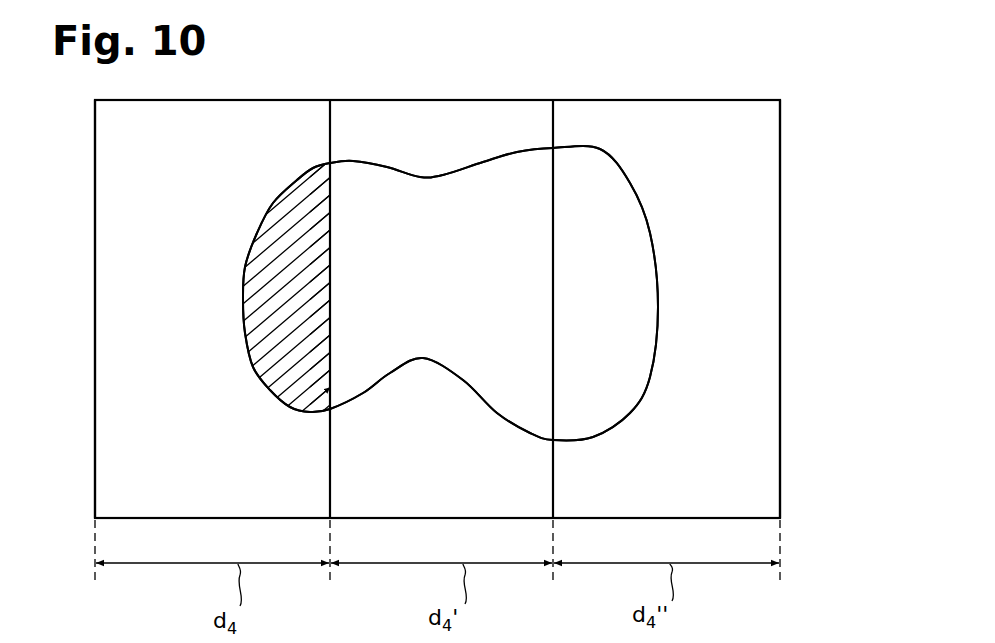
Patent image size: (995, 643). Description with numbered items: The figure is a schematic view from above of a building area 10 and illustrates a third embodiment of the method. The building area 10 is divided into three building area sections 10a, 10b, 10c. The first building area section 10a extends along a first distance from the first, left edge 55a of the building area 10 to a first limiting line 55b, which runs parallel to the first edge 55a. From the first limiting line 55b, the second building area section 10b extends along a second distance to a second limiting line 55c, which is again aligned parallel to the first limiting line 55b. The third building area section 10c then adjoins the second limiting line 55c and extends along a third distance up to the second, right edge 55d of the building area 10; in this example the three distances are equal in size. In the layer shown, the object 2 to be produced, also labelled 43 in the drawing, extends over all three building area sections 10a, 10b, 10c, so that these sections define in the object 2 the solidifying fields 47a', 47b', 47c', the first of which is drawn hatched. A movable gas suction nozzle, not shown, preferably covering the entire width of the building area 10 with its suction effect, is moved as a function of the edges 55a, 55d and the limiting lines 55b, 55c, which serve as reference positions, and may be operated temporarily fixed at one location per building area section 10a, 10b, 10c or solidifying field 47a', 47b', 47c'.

The building area 10 is at (760, 415).
The first building area section 10a is at (220, 483).
The second building area section 10b is at (466, 489).
The third building area section 10c is at (746, 495).
The first edge 55a is at (95, 437).
The first limiting line 55b is at (331, 450).
The second limiting line 55c is at (554, 480).
The second edge 55d is at (780, 307).
The object 2 is at (656, 210).
The contact region 43 is at (450, 293).
The solidifying field 47a' is at (242, 319).
The solidifying field 47b' is at (448, 238).
The solidifying field 47c' is at (610, 294).